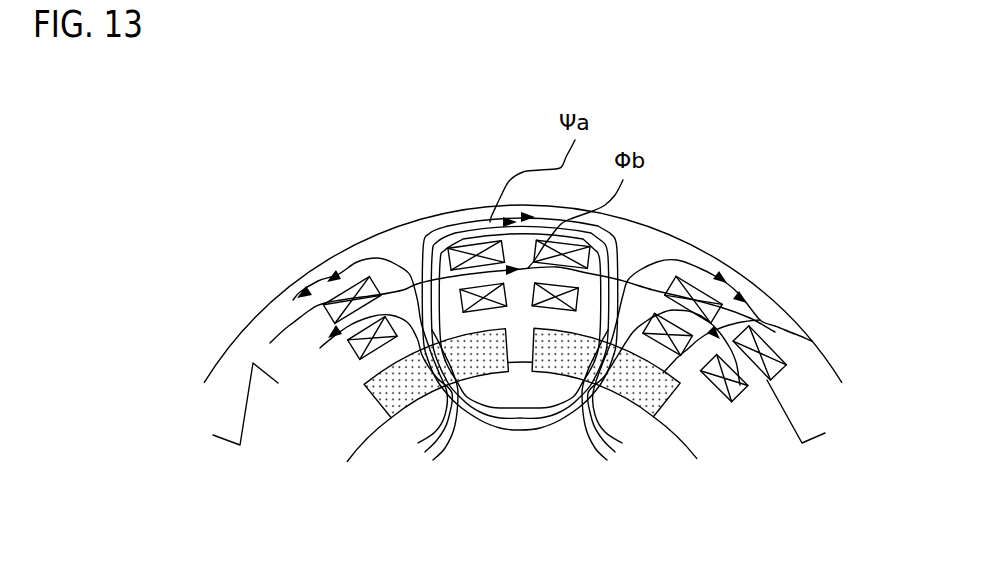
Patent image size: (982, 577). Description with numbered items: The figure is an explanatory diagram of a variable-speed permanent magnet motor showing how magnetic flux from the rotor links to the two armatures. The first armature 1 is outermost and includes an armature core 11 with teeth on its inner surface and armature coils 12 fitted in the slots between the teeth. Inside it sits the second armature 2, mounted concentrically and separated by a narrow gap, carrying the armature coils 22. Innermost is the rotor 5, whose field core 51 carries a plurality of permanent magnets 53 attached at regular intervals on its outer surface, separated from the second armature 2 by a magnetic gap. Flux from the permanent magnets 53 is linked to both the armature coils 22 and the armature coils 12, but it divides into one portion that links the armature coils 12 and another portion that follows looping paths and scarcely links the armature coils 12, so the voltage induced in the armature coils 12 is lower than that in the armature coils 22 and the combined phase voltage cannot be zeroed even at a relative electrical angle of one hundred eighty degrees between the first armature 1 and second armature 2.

The first armature 1 is at (832, 368).
The armature core 11 is at (658, 230).
The armature coils 12 is at (683, 308).
The armature coils 22 is at (735, 280).
The permanent magnets 53 is at (793, 338).
The second armature 2 is at (750, 398).
The rotor 5 is at (700, 444).
The field core 51 is at (670, 463).